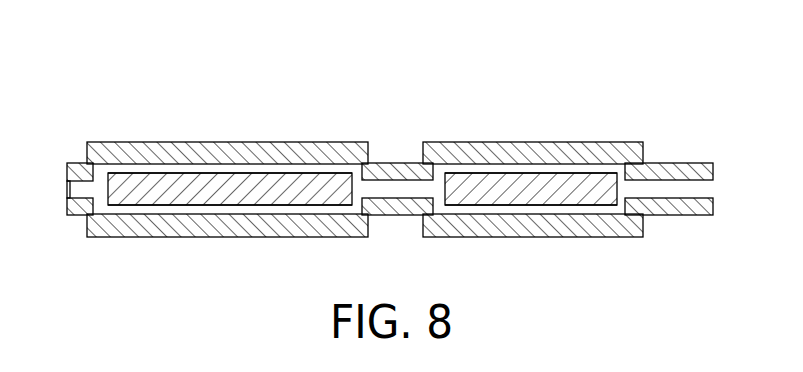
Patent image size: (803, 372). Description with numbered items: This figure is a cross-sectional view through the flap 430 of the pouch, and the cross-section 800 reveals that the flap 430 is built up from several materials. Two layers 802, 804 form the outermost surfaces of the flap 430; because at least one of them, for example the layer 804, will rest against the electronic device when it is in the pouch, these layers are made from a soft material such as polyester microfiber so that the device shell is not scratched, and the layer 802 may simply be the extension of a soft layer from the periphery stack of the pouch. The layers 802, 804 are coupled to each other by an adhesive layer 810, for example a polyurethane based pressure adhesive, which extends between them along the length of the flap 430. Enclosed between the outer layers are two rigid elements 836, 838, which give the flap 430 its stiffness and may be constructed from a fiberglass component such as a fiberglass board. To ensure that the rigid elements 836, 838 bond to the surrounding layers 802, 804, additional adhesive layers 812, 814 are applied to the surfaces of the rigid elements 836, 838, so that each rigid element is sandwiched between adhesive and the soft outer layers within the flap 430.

The cross-section 800 is at (585, 82).
The layer 802 is at (100, 155).
The layer 804 is at (173, 228).
The adhesive layer 810 is at (390, 190).
The additional adhesive layer 812 is at (303, 180).
The additional adhesive layer 814 is at (322, 205).
The rigid element 836 is at (208, 185).
The rigid element 838 is at (467, 188).
The flap 430 is at (552, 142).